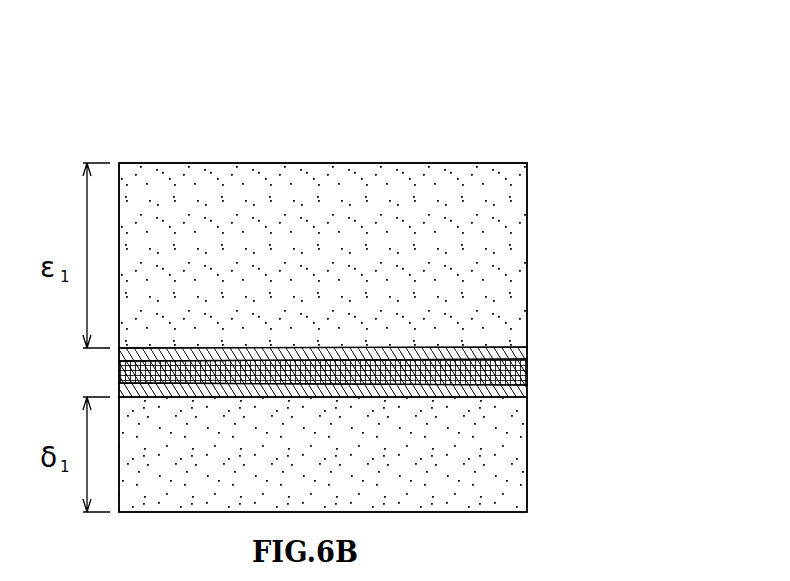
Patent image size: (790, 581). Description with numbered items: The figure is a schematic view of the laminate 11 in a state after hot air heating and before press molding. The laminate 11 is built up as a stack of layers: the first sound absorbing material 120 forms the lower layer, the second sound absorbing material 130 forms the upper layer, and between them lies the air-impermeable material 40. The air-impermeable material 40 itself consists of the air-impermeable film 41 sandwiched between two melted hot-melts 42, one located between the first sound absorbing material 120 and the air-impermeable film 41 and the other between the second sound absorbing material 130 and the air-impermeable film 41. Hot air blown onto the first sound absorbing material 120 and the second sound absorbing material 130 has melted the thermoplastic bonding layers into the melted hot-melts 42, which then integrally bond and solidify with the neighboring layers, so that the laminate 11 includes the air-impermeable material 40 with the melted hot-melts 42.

The laminate 11 is at (403, 275).
The second sound absorbing material 130 is at (498, 237).
The first sound absorbing material 120 is at (500, 483).
The air-impermeable material 40 is at (403, 371).
The air-impermeable film 41 is at (527, 371).
The melted hot-melt 42 is at (527, 351).